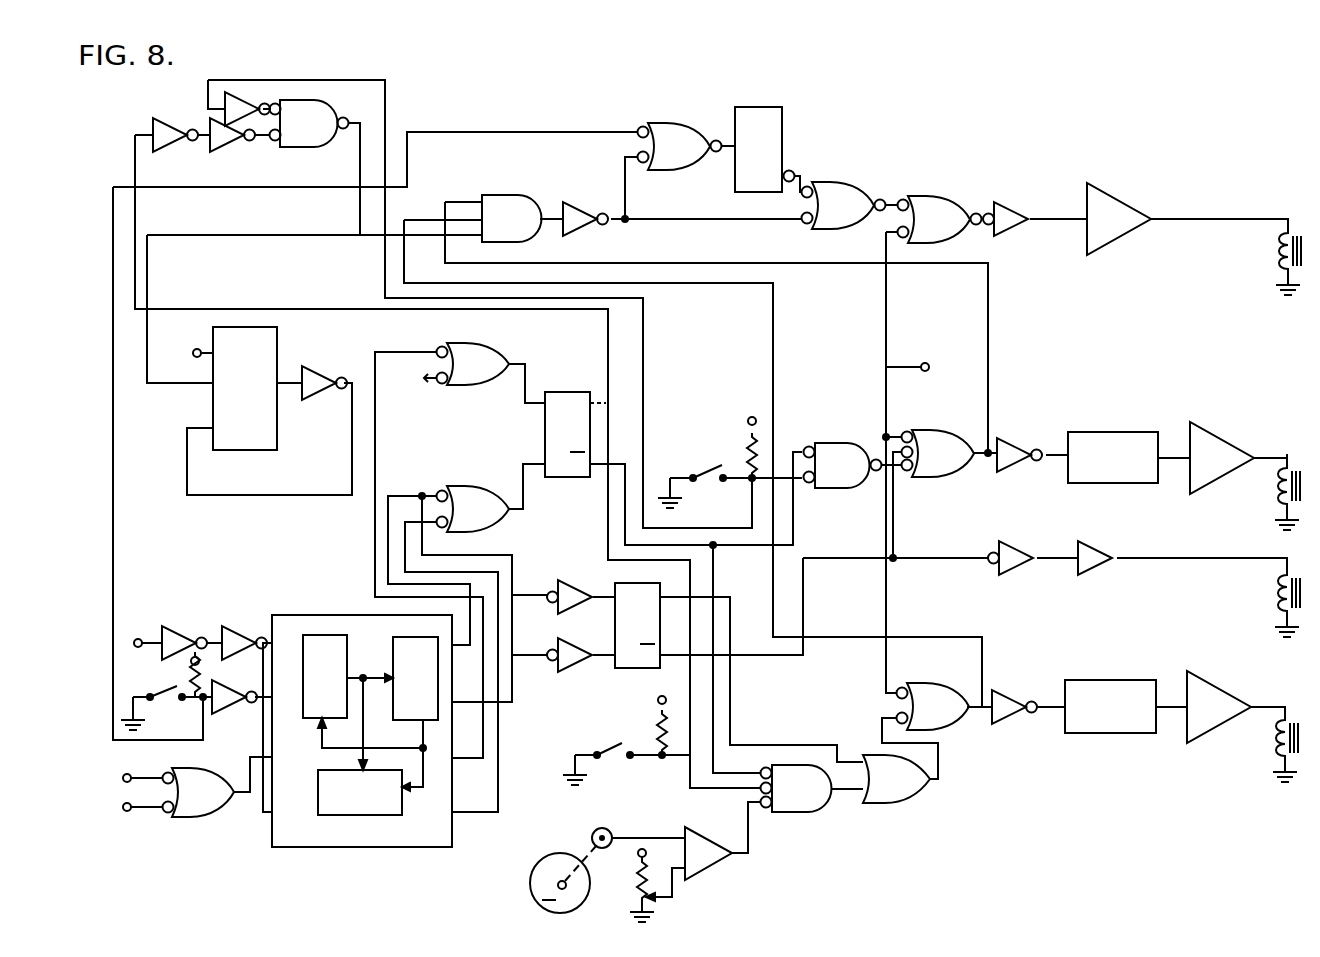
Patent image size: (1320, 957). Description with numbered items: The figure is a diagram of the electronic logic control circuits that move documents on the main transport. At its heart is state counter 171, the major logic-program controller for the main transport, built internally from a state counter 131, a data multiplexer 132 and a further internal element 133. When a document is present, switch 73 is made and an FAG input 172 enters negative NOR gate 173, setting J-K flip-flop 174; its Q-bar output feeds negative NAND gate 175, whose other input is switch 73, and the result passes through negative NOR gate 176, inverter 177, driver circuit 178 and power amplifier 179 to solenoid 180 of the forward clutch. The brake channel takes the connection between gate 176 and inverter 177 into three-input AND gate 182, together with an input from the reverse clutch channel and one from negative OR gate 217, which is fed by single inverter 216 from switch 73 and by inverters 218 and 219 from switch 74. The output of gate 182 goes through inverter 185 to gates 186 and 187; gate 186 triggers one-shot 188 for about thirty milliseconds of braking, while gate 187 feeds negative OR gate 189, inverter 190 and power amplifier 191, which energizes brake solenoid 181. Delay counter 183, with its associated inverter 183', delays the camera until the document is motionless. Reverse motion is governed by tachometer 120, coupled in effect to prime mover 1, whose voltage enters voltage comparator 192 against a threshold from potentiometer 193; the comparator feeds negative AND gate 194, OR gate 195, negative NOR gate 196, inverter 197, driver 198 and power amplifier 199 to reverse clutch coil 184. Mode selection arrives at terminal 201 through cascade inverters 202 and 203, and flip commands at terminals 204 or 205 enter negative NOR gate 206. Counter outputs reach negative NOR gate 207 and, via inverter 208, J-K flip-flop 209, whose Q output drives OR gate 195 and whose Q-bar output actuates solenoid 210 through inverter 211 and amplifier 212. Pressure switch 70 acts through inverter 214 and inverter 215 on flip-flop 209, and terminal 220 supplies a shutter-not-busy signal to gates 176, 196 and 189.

The prime mover 1 is at (563, 879).
The pressure switch 70 is at (168, 695).
The switch 73 is at (718, 472).
The switch 74 is at (622, 747).
The tachometer 120 is at (606, 832).
The state counter 131 is at (310, 720).
The data multiplexer 132 is at (423, 695).
The counter register 133 is at (402, 795).
The state counter 171 is at (440, 848).
The input 172 is at (432, 380).
The negative NOR gate 173 is at (500, 350).
The J-K flip-flop 174 is at (585, 388).
The negative NAND gate 175 is at (840, 447).
The negative NOR gate 176 is at (947, 428).
The inverter 177 is at (1022, 440).
The driver circuit 178 is at (1130, 430).
The power amplifier 179 is at (1230, 437).
The solenoid 180 is at (1268, 492).
The solenoid 181 is at (1276, 257).
The three-input AND gate 182 is at (512, 195).
The delay counter 183 is at (264, 385).
The inverter 183' is at (340, 374).
The reverse clutch coil 184 is at (1267, 744).
The inverter 185 is at (585, 200).
The logical AND gate 186 is at (697, 125).
The negative OR gate 187 is at (858, 182).
The one-shot 188 is at (783, 118).
The negative OR gate 189 is at (955, 197).
The inverter 190 is at (1012, 204).
The power amplifier 191 is at (1118, 200).
The voltage comparator 192 is at (705, 832).
The potentiometer 193 is at (640, 908).
The negative AND gate 194 is at (814, 812).
The OR gate 195 is at (918, 788).
The negative NOR gate 196 is at (953, 726).
The inverter 197 is at (1008, 722).
The driver 198 is at (1132, 679).
The power amplifier 199 is at (1225, 689).
The terminal 201 is at (139, 638).
The inverter 202 is at (178, 622).
The inverter 203 is at (245, 622).
The terminal 204 is at (142, 764).
The terminal 205 is at (145, 824).
The negative NOR gate 206 is at (220, 780).
The negative NOR gate 207 is at (492, 488).
The inverter 208 is at (575, 578).
The J-K flip-flop 209 is at (652, 670).
The solenoid 210 is at (1267, 599).
The inverter 211 is at (1014, 546).
The amplifier 212 is at (1097, 548).
The inverter 214 is at (240, 685).
The inverter 215 is at (583, 640).
The single inverter 216 is at (213, 104).
The negative OR gate 217 is at (337, 100).
The inverter 218 is at (168, 150).
The inverter 219 is at (226, 150).
The terminal 220 is at (935, 360).